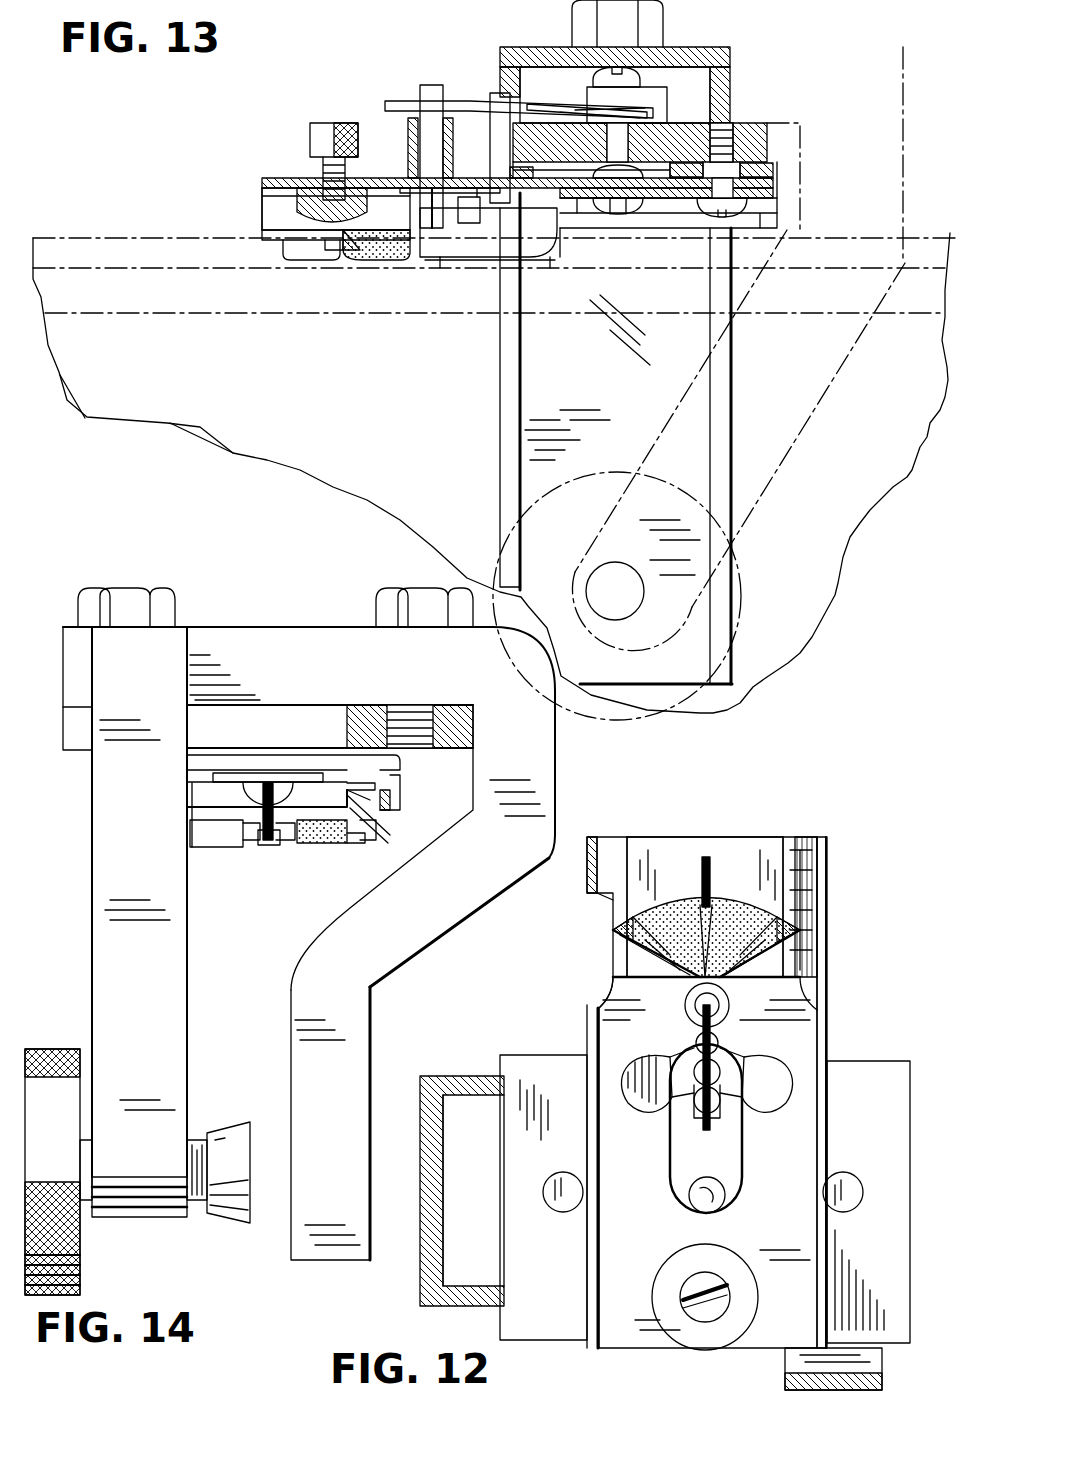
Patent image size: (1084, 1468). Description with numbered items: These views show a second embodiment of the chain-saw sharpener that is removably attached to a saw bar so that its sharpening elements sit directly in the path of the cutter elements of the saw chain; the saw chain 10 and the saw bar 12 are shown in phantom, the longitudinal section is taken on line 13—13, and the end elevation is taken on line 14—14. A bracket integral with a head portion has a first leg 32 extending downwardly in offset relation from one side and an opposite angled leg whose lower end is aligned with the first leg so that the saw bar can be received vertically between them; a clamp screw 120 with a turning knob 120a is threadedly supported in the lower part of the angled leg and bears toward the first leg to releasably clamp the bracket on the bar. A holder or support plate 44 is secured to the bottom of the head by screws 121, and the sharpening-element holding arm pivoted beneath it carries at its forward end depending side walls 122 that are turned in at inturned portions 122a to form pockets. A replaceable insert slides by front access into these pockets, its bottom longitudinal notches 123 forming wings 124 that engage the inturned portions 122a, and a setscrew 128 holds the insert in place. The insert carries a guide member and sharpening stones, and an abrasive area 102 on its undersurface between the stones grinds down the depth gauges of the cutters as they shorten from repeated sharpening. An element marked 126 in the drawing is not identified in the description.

In FIG. 13, the saw chain 10 is at (80, 236).
In FIG. 13, the saw bar 12 is at (179, 428).
In FIG. 13, the section line 14— 14 is at (160, 236).
In FIG. 12, the section line 13— 13 is at (770, 773).
In FIG. 13, the leg 32 is at (661, 665).
In FIG. 14, the leg 32 is at (427, 935).
In FIG. 12, the leg 32 is at (446, 1304).
In FIG. 13, the holder or support plate 44 is at (757, 130).
In FIG. 14, the holder or support plate 44 is at (447, 748).
In FIG. 12, the holder or support plate 44 is at (513, 1062).
In FIG. 13, the abrasive area 102 is at (333, 252).
In FIG. 14, the abrasive area 102 is at (255, 843).
In FIG. 12, the abrasive area 102 is at (663, 913).
In FIG. 13, the clamp screw 120 is at (628, 556).
In FIG. 14, the clamp screw 120 is at (202, 1209).
In FIG. 14, the turning knob 120a is at (82, 1278).
In FIG. 13, the screws 121 is at (664, 10).
In FIG. 14, the screws 121 is at (128, 592).
In FIG. 12, the screws 121 is at (552, 1192).
In FIG. 13, the depending side walls 122 is at (776, 211).
In FIG. 14, the depending side walls 122 is at (400, 803).
In FIG. 12, the depending side walls 122 is at (823, 1052).
In FIG. 14, the inturned side wall portions 122a is at (365, 803).
In FIG. 12, the inturned side wall portions 122a is at (807, 843).
In FIG. 14, the bottom longitudinal notches 123 is at (352, 805).
In FIG. 12, the bottom longitudinal notches 123 is at (610, 878).
In FIG. 13, the wings 124 is at (262, 192).
In FIG. 14, the wings 124 is at (373, 780).
In FIG. 12, the wings 124 is at (605, 845).
In FIG. 13, the retainer 126 is at (273, 242).
In FIG. 14, the retainer 126 is at (210, 825).
In FIG. 12, the retainer 126 is at (645, 850).
In FIG. 13, the setscrew 128 is at (334, 121).